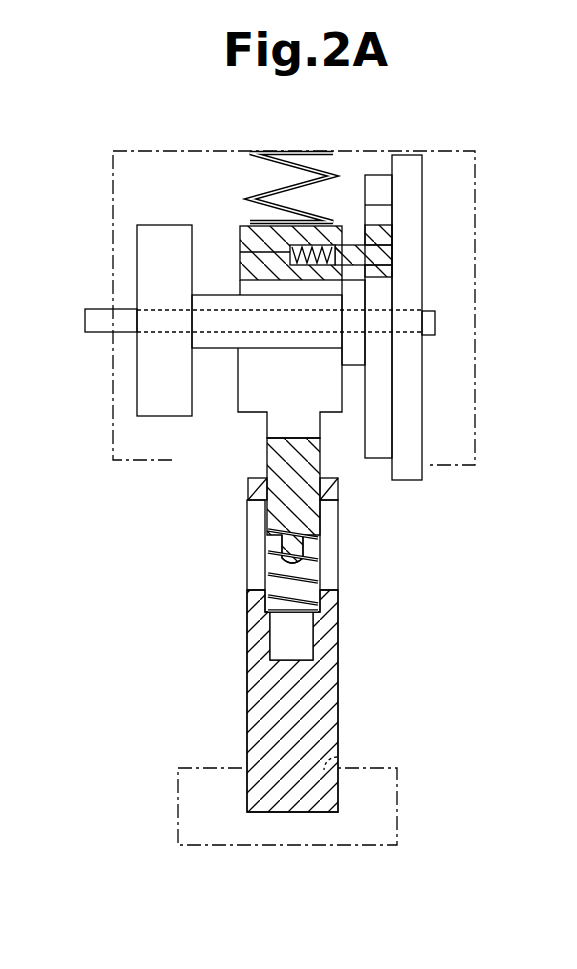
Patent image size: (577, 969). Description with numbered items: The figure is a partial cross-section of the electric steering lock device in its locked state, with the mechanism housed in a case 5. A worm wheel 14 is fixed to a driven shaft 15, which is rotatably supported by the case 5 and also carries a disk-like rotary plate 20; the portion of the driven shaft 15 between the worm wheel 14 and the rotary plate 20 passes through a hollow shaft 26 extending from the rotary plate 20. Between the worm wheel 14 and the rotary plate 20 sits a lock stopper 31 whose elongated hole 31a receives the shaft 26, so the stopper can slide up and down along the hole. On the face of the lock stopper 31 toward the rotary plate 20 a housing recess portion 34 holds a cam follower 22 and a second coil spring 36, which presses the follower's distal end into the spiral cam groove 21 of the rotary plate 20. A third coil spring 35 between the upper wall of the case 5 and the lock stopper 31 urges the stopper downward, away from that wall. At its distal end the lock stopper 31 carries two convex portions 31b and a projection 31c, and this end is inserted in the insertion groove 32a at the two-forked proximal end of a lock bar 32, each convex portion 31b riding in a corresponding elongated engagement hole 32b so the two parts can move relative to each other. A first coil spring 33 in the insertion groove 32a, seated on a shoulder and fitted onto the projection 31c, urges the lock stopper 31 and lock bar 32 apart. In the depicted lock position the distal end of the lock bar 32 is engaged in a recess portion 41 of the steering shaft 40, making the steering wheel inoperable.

The case 5 is at (475, 313).
The worm wheel 14 is at (148, 225).
The driven shaft 15 is at (96, 310).
The rotary plate 20 is at (417, 178).
The cam groove 21 is at (388, 186).
The cam follower 22 is at (388, 262).
The hollow shaft 26 is at (214, 350).
The lock stopper 31 is at (312, 530).
The elongated hole 31a is at (244, 290).
The convex portions for engagement 31b is at (258, 510).
The projection 31c is at (290, 556).
The lock bar 32 is at (334, 674).
The insertion groove 32a is at (268, 602).
The engagement holes 32b is at (250, 585).
The first coil spring 33 is at (314, 560).
The housing recess portion 34 is at (318, 258).
The third coil spring 35 is at (262, 152).
The second coil spring 36 is at (242, 232).
The steering shaft 40 is at (400, 804).
The recess portion 41 is at (338, 757).